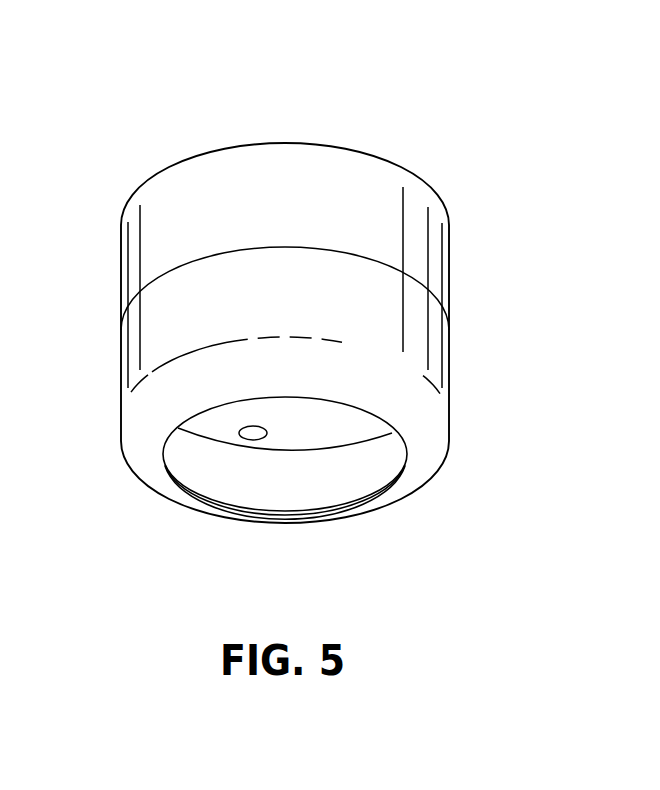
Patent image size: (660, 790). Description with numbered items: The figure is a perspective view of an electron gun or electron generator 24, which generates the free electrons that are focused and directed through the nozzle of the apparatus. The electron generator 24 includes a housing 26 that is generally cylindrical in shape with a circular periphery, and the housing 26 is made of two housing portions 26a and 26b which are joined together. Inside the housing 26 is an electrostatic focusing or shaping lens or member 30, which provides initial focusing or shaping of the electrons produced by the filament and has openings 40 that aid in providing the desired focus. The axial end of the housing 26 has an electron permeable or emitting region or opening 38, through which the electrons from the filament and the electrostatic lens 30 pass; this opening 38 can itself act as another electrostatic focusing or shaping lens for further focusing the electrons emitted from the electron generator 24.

The electron generator 24 is at (325, 125).
The housing 26 is at (435, 346).
The housing portion 26a is at (128, 259).
The housing portion 26b is at (130, 360).
The electrostatic lens 30 is at (340, 435).
The electron emitting opening 38 is at (283, 517).
The openings 40 is at (253, 440).